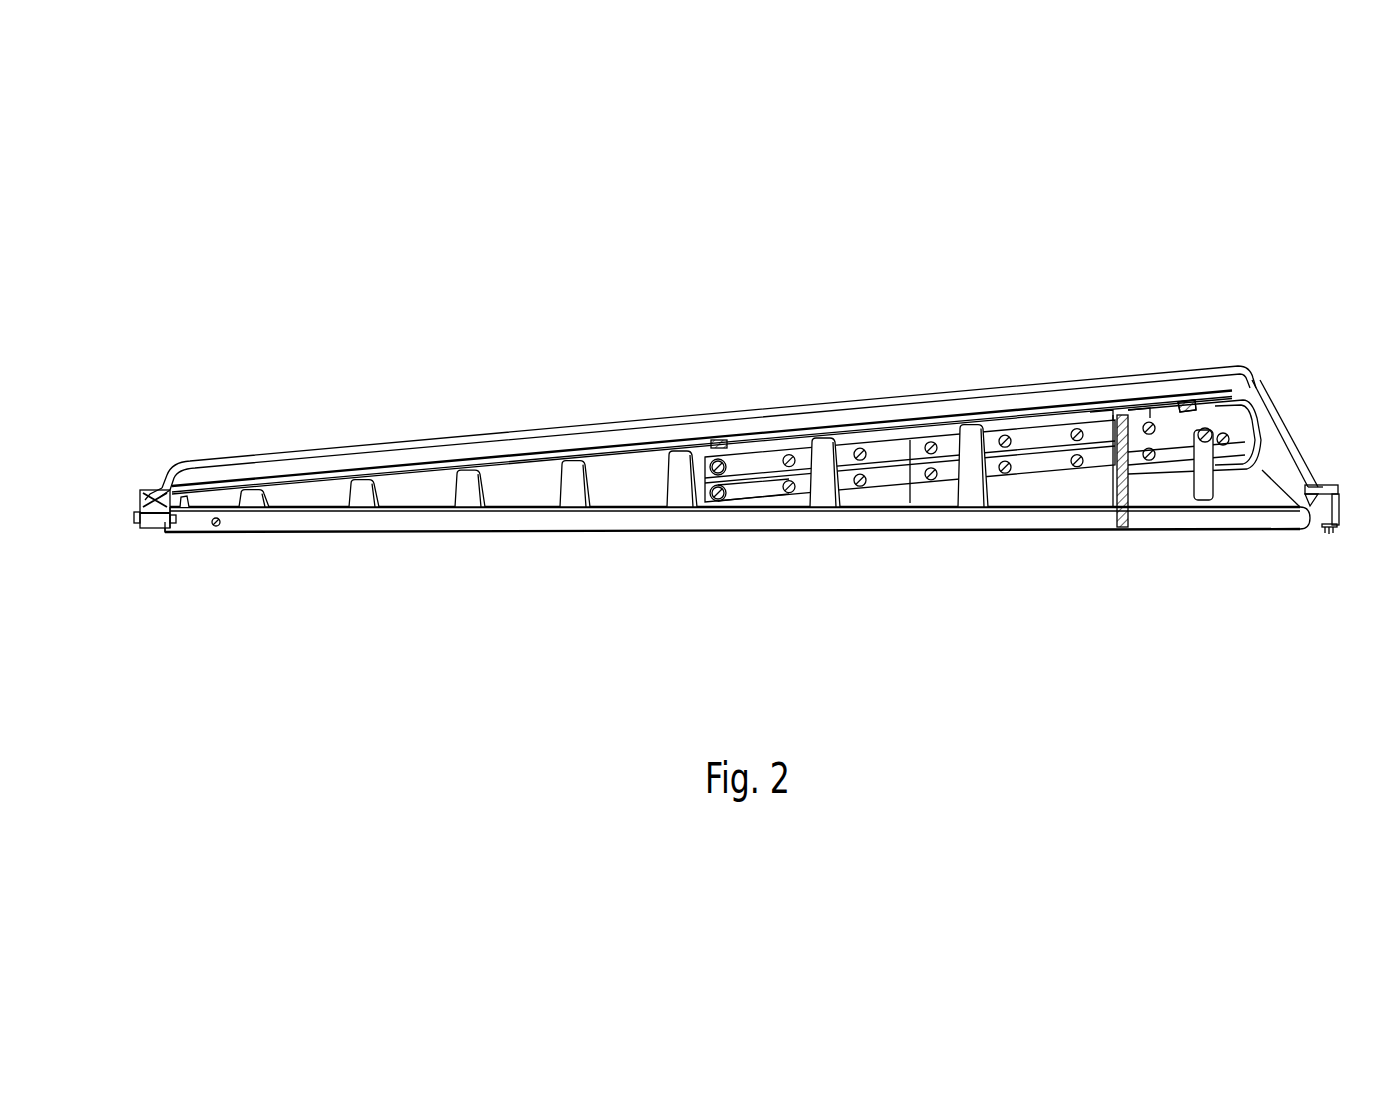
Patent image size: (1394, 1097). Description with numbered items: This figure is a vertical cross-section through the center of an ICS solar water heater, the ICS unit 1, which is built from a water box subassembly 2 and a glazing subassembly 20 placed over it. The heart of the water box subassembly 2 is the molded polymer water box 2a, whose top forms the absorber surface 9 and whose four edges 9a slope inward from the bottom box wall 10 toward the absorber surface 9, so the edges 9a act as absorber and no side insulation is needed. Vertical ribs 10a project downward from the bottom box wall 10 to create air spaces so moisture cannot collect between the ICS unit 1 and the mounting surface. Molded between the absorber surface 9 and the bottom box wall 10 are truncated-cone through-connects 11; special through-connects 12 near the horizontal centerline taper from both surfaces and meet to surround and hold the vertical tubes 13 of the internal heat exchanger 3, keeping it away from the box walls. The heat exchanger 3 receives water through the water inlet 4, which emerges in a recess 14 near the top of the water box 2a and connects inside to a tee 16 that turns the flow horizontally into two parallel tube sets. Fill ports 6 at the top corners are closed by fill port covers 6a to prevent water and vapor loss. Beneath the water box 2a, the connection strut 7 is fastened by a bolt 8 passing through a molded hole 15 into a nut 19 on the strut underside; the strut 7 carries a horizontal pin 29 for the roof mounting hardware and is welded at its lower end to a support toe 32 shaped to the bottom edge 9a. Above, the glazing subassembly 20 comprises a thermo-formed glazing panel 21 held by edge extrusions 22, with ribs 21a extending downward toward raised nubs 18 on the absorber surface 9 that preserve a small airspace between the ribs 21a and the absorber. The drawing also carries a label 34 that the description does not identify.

The ICS unit 1 is at (580, 255).
The water box subassembly 2 is at (378, 490).
The water box 2a is at (435, 490).
The glazing subassembly 20 is at (203, 457).
The glazing panel 21 is at (237, 455).
The ribs 21a is at (522, 458).
The internal heat exchanger 3 is at (713, 466).
The raised nubs 18 is at (720, 447).
The absorber surface 9 is at (800, 440).
The edges 9a is at (1267, 437).
The through-connects 11 is at (826, 445).
The special through-connects 12 is at (893, 490).
The vertical tubes 13 is at (1037, 443).
The stop 34 is at (1098, 410).
The bolt 8 is at (1120, 413).
The hole 15 is at (1137, 411).
The fill ports 6 is at (1190, 408).
The fill port covers 6a is at (1187, 406).
The tee 16 is at (1217, 438).
The edge extrusions 22 is at (137, 508).
The support toe 32 is at (168, 532).
The horizontal pin 29 is at (217, 527).
The connection strut 7 is at (320, 520).
The bottom box wall 10 is at (777, 510).
The vertical ribs 10a is at (873, 520).
The nut 19 is at (1130, 520).
The water inlet 4 is at (1203, 485).
The recess 14 is at (1263, 490).